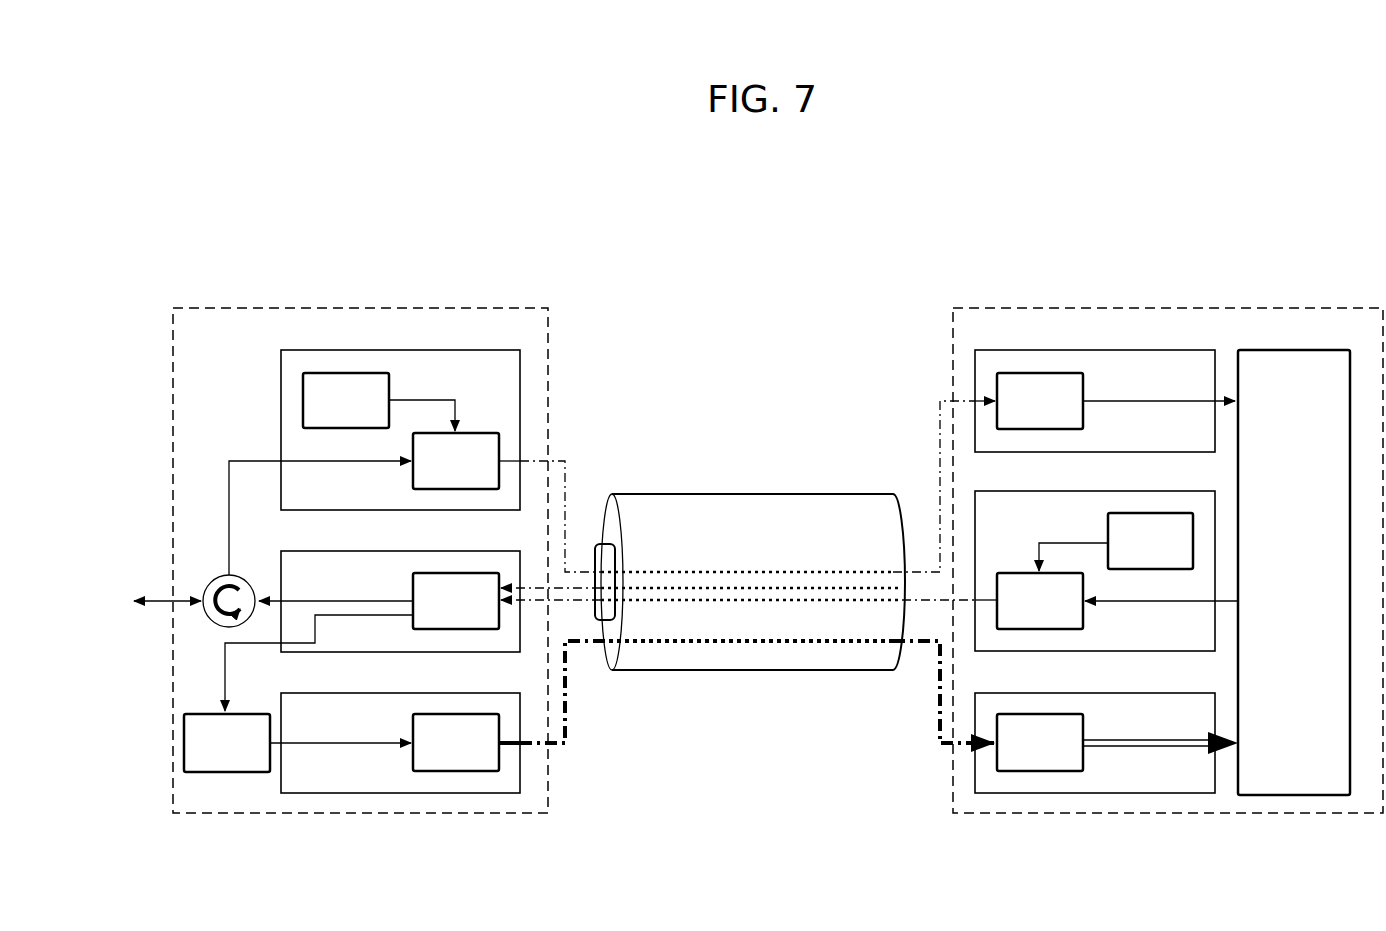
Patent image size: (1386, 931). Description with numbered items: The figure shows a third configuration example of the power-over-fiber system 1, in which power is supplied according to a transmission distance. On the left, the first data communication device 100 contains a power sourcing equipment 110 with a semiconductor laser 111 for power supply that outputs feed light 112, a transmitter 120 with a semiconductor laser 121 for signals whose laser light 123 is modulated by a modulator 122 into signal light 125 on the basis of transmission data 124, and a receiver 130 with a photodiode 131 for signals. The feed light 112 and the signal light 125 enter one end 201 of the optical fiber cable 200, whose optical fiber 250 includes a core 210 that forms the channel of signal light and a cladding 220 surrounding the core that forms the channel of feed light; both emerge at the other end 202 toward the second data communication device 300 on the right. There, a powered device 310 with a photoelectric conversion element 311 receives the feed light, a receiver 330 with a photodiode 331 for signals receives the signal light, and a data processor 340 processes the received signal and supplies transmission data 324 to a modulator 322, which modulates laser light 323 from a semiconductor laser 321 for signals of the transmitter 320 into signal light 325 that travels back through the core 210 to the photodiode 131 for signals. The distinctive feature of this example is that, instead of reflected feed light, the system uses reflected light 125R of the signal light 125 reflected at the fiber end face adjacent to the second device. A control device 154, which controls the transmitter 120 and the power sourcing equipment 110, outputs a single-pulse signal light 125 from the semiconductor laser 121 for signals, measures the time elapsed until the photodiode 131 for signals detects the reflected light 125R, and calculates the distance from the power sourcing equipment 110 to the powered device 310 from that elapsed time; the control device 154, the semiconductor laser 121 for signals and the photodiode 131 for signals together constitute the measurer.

The power-over-fiber system 1 is at (911, 220).
The first data communication device 100 is at (395, 307).
The power sourcing equipment 110 is at (350, 693).
The semiconductor laser for power supply 111 is at (412, 728).
The feed light 112 is at (562, 747).
The transmitter 120 is at (350, 350).
The semiconductor laser for signals 121 is at (392, 385).
The modulator 122 is at (412, 479).
The laser light 123 is at (449, 399).
The transmission data 124 is at (322, 463).
The signal light 125 is at (553, 459).
The reflected light 125R is at (698, 590).
The receiver 130 is at (350, 551).
The photodiode for signals 131 is at (412, 586).
The control device 154 is at (212, 712).
The optical fiber cable 200 is at (756, 448).
The one end 201 is at (602, 670).
The other end 202 is at (902, 670).
The core 210 is at (598, 566).
The cladding 220 is at (613, 524).
The optical fiber 250 is at (809, 493).
The second data communication device 300 is at (1083, 308).
The powered device 310 is at (1153, 693).
The photoelectric conversion element 311 is at (1086, 731).
The transmitter 320 is at (1153, 491).
The semiconductor laser for signals 321 is at (1141, 571).
The modulator 322 is at (1086, 618).
The laser light 323 is at (1068, 542).
The transmission data 324 is at (1142, 603).
The signal light 325 is at (938, 599).
The receiver 330 is at (1153, 350).
The photodiode for signals 331 is at (1086, 390).
The data processor 340 is at (1301, 350).